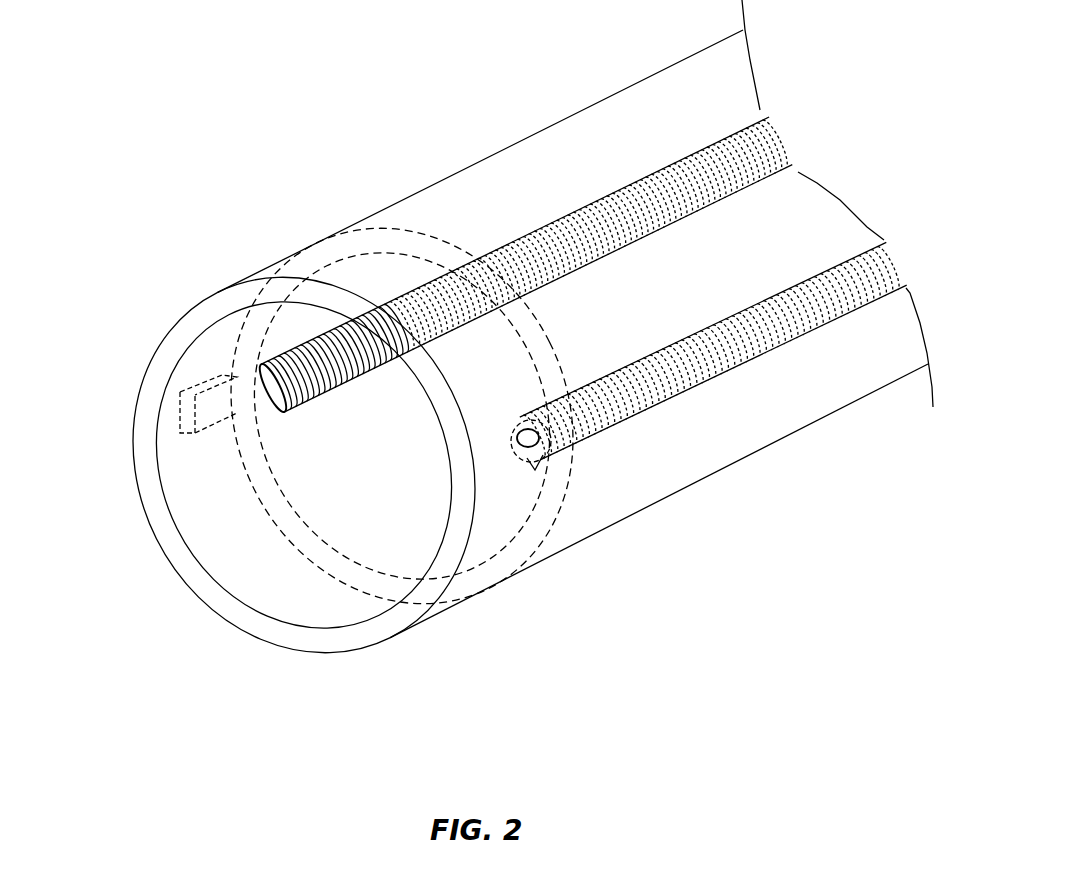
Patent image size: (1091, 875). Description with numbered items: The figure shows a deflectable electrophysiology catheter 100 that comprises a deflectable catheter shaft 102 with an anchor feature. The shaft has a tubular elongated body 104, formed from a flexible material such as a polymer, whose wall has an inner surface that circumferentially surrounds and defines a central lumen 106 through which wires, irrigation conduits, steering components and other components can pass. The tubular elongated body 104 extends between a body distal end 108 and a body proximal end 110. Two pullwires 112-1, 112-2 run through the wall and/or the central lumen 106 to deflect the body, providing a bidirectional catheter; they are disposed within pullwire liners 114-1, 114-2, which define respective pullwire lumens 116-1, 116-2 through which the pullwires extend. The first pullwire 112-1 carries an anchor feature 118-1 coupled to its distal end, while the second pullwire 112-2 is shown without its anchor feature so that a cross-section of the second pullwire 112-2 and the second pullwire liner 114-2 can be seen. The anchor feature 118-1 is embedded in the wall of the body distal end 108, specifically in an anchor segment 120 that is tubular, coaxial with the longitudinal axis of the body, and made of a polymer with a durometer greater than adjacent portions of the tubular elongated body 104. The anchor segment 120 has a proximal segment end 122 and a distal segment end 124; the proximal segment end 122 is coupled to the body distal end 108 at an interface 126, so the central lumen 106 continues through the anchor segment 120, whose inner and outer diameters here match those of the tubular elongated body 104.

The deflectable electrophysiology catheter 100 is at (350, 60).
The deflectable catheter shaft 102 is at (732, 553).
The tubular elongated body 104 is at (863, 398).
The central lumen 106 is at (372, 528).
The body distal end 108 is at (551, 556).
The body proximal end 110 is at (697, 52).
The first pullwire 112-1 is at (270, 397).
The second pullwire 112-2 is at (541, 444).
The first pullwire liner 114-1 is at (410, 290).
The second pullwire liner 114-2 is at (820, 265).
The first pullwire lumen 116-1 is at (270, 360).
The second pullwire lumen 116-2 is at (552, 441).
The anchor feature 118-1 is at (180, 415).
The anchor segment 120 is at (278, 262).
The proximal segment end 122 is at (490, 586).
The distal segment end 124 is at (152, 498).
The interface 126 is at (297, 532).